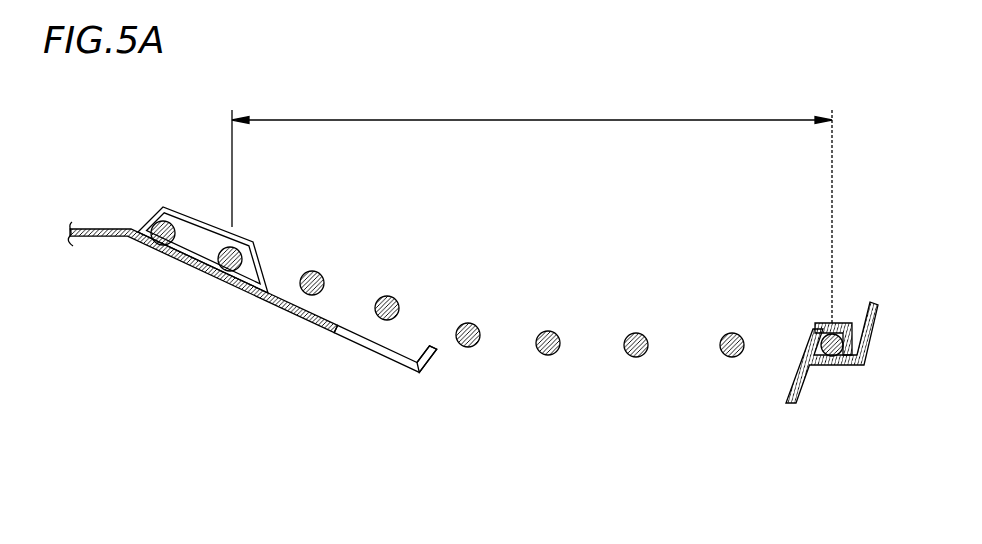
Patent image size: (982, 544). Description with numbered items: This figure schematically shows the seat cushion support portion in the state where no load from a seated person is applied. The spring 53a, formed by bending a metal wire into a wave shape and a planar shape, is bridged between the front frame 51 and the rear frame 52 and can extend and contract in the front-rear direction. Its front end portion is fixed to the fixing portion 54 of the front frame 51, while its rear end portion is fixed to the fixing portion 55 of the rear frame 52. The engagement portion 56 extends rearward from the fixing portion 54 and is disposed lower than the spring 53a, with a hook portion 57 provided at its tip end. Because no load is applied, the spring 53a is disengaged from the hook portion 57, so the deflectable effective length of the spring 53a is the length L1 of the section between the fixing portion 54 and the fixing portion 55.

The front frame 51 is at (88, 229).
The rear frame 52 is at (832, 370).
The spring 53a is at (636, 333).
The fixing portion 54 is at (213, 227).
The fixing portion 55 is at (815, 323).
The engagement portion 56 is at (357, 343).
The hook portion 57 is at (435, 358).
The length L1 is at (532, 208).